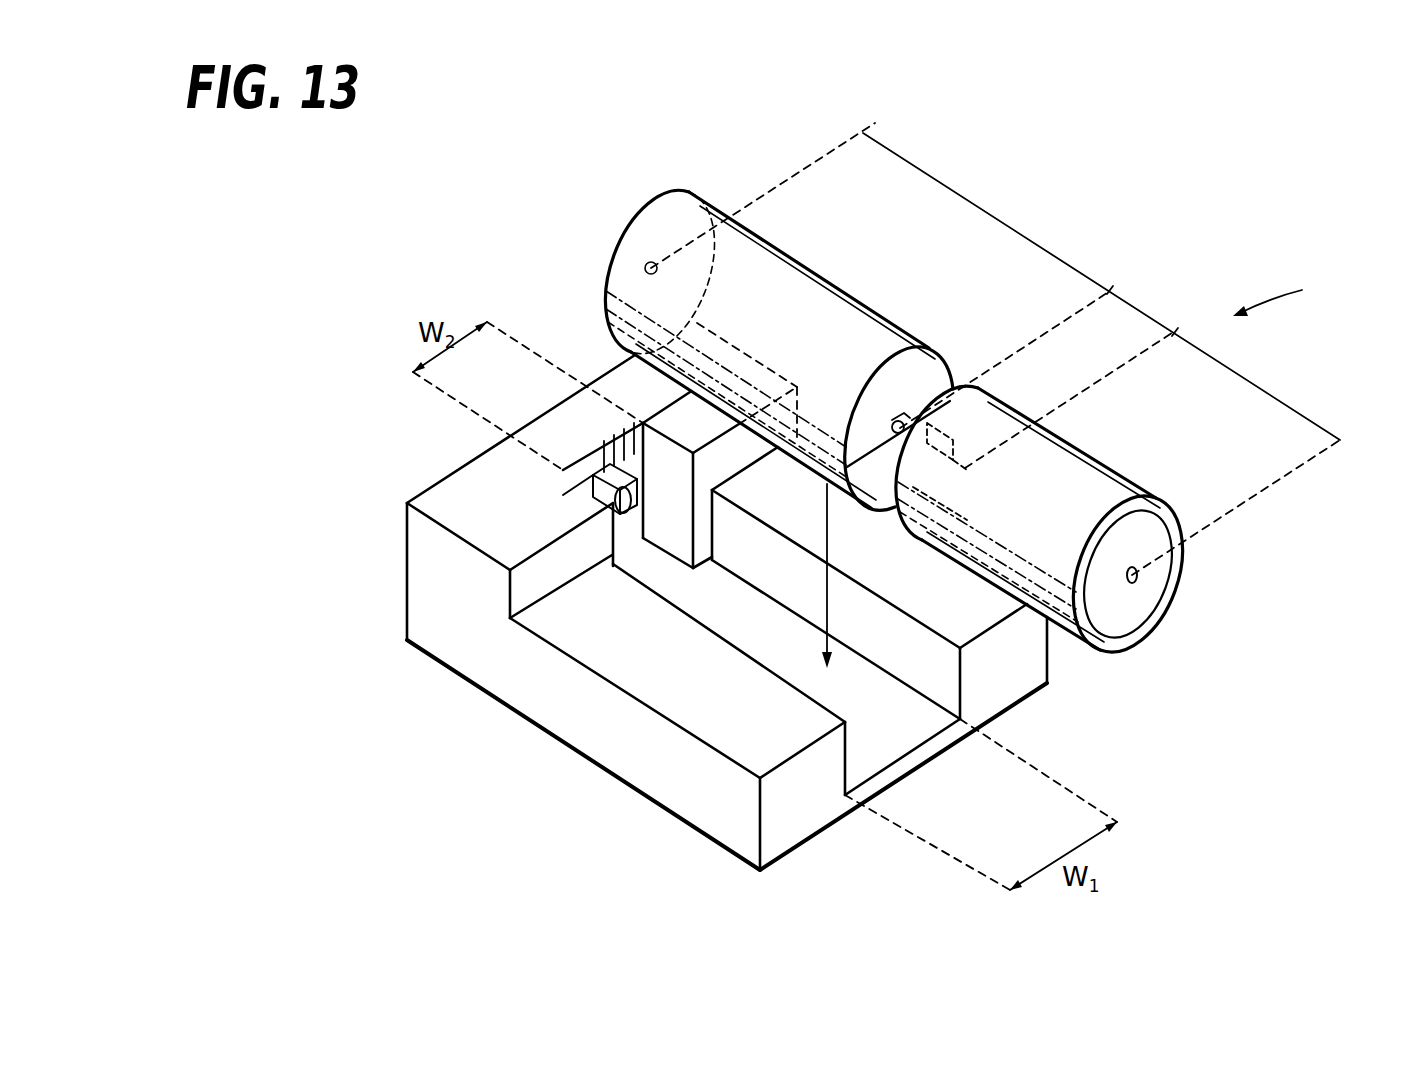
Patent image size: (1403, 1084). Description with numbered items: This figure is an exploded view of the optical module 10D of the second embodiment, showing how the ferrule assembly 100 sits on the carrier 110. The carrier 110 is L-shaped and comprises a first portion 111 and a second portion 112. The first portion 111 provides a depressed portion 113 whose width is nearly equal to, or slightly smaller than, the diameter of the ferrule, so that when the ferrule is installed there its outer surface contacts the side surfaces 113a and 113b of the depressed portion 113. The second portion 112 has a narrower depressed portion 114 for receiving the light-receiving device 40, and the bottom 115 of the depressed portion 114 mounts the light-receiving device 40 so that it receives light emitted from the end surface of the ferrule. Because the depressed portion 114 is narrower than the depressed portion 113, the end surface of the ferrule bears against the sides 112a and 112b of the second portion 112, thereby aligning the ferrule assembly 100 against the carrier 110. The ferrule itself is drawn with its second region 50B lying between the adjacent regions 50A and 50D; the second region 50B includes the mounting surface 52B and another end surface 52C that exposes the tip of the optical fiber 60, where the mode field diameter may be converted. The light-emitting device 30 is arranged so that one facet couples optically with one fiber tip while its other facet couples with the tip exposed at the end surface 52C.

The optical module 10D is at (1300, 293).
The light-emitting device 30 is at (901, 445).
The light-receiving device 40 is at (610, 470).
The region of the ferrule 50A is at (1099, 490).
The second region of the ferrule 50B is at (1044, 350).
The region of the ferrule 50D is at (816, 315).
The mounting surface 52B is at (868, 502).
The end surface 52C is at (913, 383).
The optical fiber 60 is at (1131, 585).
The ferrule assembly 100 is at (1167, 603).
The carrier 110 is at (760, 872).
The first portion of the carrier 111 is at (710, 720).
The second portion of the carrier 112 is at (458, 513).
The side of the second region 112a is at (703, 527).
The side of the second region 112b is at (613, 558).
The depressed portion 113 is at (883, 720).
The side surface of the depressed portion 113a is at (945, 668).
The side surface of the depressed portion 113b is at (846, 800).
The depressed portion 114 is at (669, 491).
The bottom of the depressed portion 115 is at (598, 448).